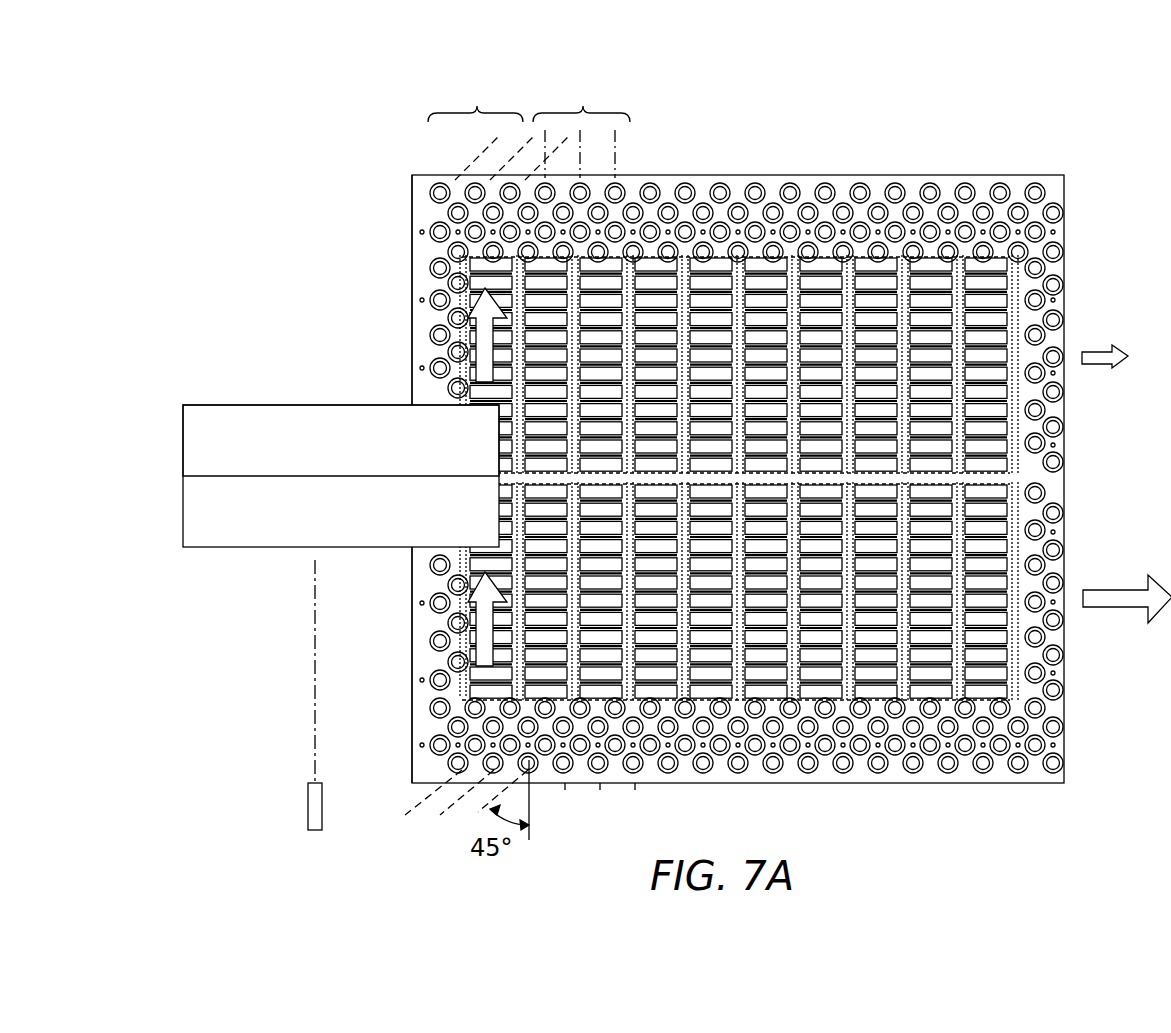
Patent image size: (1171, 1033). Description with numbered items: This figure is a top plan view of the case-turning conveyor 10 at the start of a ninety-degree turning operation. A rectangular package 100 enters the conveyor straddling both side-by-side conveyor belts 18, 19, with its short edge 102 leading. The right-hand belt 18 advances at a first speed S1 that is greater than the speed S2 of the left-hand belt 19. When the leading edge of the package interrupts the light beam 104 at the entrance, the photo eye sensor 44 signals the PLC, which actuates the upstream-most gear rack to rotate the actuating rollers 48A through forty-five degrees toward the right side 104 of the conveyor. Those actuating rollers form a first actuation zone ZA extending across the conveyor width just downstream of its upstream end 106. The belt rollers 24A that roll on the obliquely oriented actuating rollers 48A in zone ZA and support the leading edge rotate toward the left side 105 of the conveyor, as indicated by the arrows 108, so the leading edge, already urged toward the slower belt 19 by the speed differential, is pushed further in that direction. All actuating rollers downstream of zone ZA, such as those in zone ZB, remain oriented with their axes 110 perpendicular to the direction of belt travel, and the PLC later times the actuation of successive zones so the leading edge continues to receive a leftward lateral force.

The case-turning conveyor 10 is at (910, 118).
The left-hand conveyor belt 19 is at (710, 285).
The left side of the conveyor 105 is at (783, 178).
The axes of actuating rollers 110 is at (615, 160).
The actuating rollers 48A is at (440, 271).
The arrows indicating roller rotation 108 is at (495, 340).
The upstream end of the conveyor 106 is at (408, 392).
The short edge of the package 102 is at (497, 440).
The rectangular package 100 is at (320, 536).
The light beam / right side of the conveyor 104 is at (315, 633).
The photo eye sensor 44 is at (308, 795).
The belt rollers 24A is at (470, 686).
The right-hand conveyor belt 18 is at (815, 672).
The first speed S1 is at (1103, 607).
The second speed S2 is at (1097, 366).
The first actuation zone ZA is at (477, 106).
The second actuation zone ZB is at (583, 106).